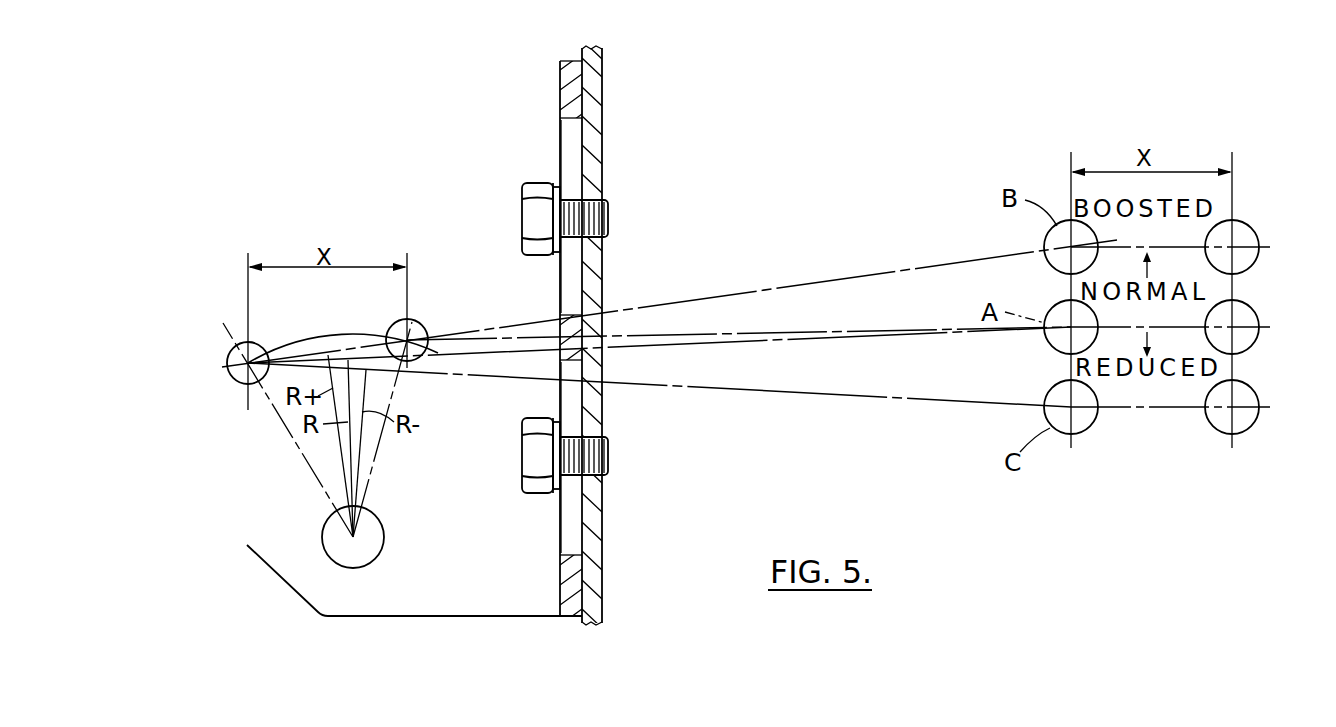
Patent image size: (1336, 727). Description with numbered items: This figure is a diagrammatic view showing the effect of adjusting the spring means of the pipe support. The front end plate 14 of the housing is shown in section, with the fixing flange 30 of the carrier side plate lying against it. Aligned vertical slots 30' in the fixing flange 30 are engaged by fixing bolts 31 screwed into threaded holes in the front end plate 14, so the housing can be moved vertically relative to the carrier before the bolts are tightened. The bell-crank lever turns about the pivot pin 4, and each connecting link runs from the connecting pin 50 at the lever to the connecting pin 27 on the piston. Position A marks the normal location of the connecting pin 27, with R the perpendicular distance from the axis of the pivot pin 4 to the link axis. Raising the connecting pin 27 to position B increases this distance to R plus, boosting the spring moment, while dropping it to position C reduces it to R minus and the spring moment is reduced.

The front end plate 14 is at (594, 112).
The fixing flange 30 is at (414, 339).
The slots 30' is at (531, 332).
The fixing bolts 31 is at (537, 220).
The connecting pin 50 is at (244, 343).
The pivot pin 4 is at (369, 548).
The connecting pin 27 is at (1062, 313).